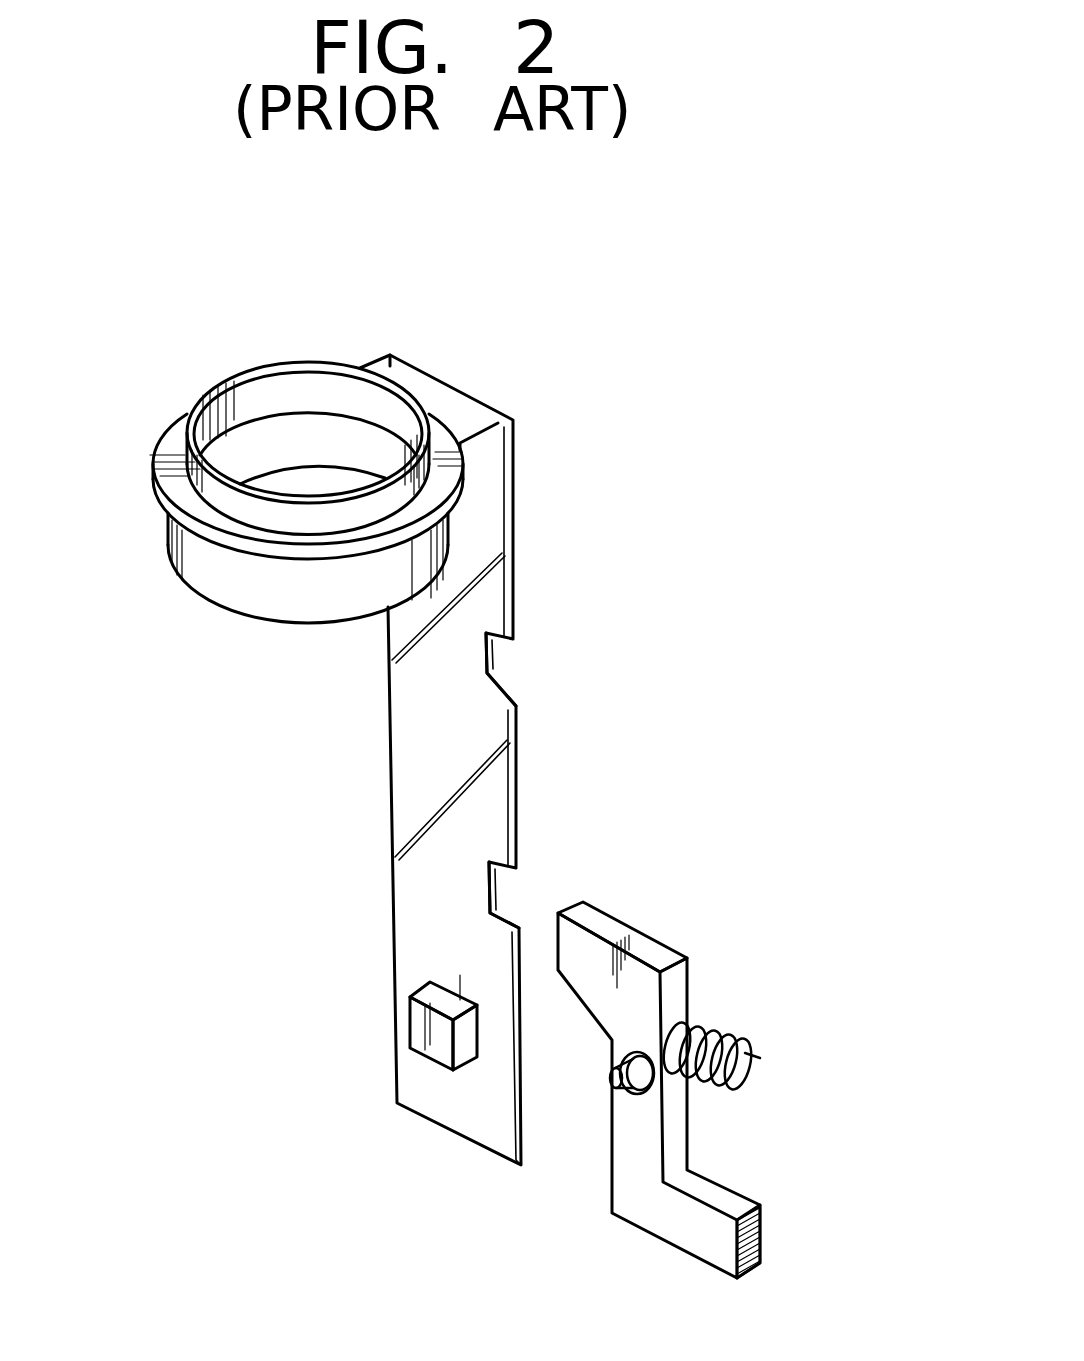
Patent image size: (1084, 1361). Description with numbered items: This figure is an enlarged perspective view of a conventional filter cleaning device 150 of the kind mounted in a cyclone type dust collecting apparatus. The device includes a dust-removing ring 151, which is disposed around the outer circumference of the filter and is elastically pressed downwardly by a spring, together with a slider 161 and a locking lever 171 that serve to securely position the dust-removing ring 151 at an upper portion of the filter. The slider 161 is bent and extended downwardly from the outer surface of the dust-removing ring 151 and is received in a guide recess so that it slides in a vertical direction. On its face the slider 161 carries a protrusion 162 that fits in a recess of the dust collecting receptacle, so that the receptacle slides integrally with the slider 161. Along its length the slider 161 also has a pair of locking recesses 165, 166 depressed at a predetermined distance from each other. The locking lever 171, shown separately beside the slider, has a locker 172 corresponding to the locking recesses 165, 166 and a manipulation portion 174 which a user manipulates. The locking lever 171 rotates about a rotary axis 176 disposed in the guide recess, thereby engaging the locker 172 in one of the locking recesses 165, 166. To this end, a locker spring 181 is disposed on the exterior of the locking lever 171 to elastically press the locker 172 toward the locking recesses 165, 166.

The filter cleaning device 150 is at (572, 315).
The dust-removing ring 151 is at (170, 445).
The slider 161 is at (427, 728).
The protrusion 162 is at (417, 1022).
The locking recess 165 is at (493, 653).
The locking recess 166 is at (492, 908).
The locking lever 171 is at (630, 1148).
The locker 172 is at (603, 920).
The manipulation portion 174 is at (762, 1233).
The rotary axis 176 is at (614, 1086).
The locker spring 181 is at (722, 1035).